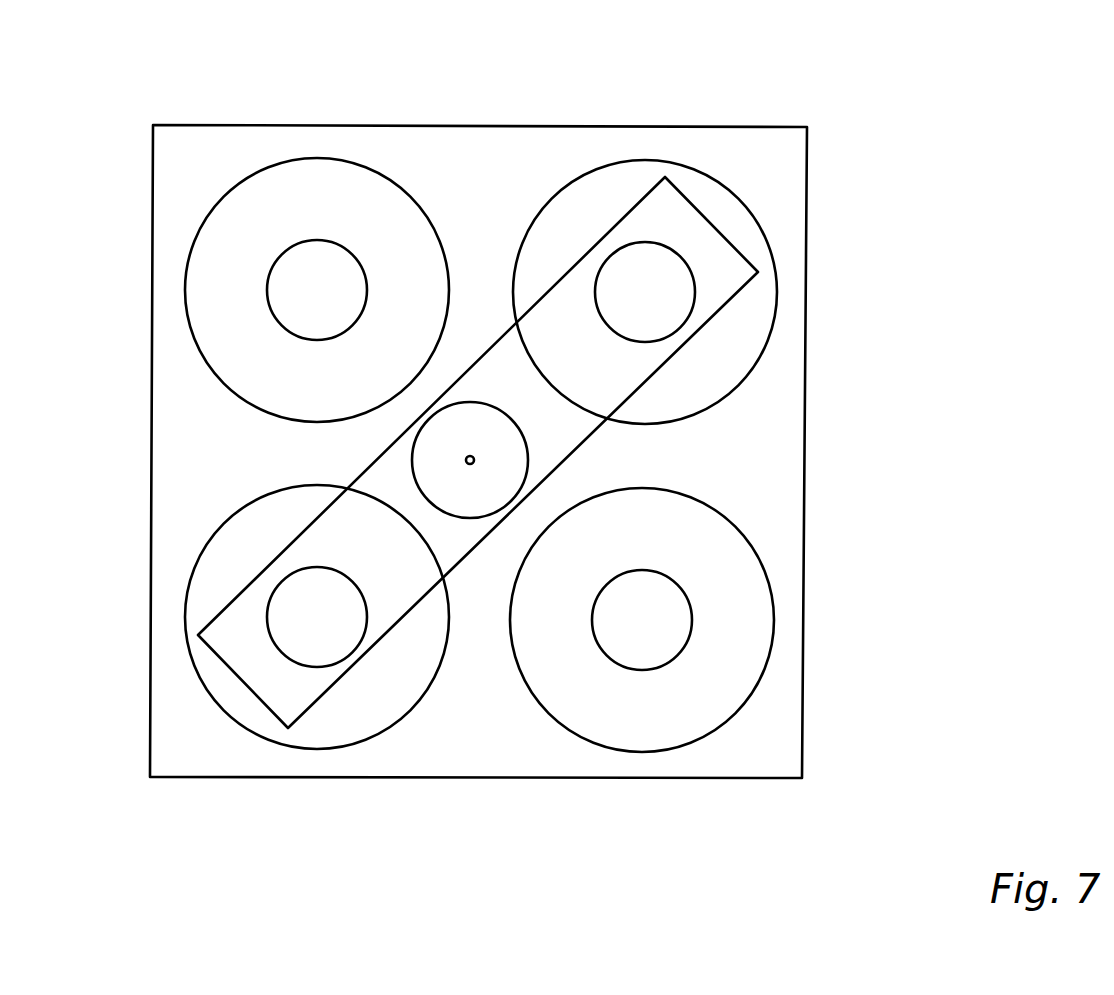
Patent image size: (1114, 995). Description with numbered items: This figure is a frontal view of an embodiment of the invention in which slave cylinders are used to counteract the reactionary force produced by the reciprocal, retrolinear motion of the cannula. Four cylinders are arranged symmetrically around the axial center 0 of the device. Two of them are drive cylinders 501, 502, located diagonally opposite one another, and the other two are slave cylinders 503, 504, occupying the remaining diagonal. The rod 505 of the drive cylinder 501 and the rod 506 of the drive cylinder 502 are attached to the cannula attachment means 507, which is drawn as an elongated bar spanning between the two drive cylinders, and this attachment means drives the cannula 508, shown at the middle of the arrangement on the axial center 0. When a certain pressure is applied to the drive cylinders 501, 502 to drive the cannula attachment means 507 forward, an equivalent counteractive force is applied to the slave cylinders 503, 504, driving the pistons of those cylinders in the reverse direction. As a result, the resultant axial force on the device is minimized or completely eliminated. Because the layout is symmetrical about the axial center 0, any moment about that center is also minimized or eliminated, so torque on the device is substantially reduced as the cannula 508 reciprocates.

The drive cylinder 501 is at (655, 158).
The drive cylinder 502 is at (360, 743).
The slave cylinder 503 is at (320, 157).
The slave cylinder 504 is at (688, 738).
The rod 505 is at (693, 273).
The rod 506 is at (283, 658).
The cannula attachment means 507 is at (683, 343).
The cannula 508 is at (413, 467).
The axial center 0 is at (474, 460).